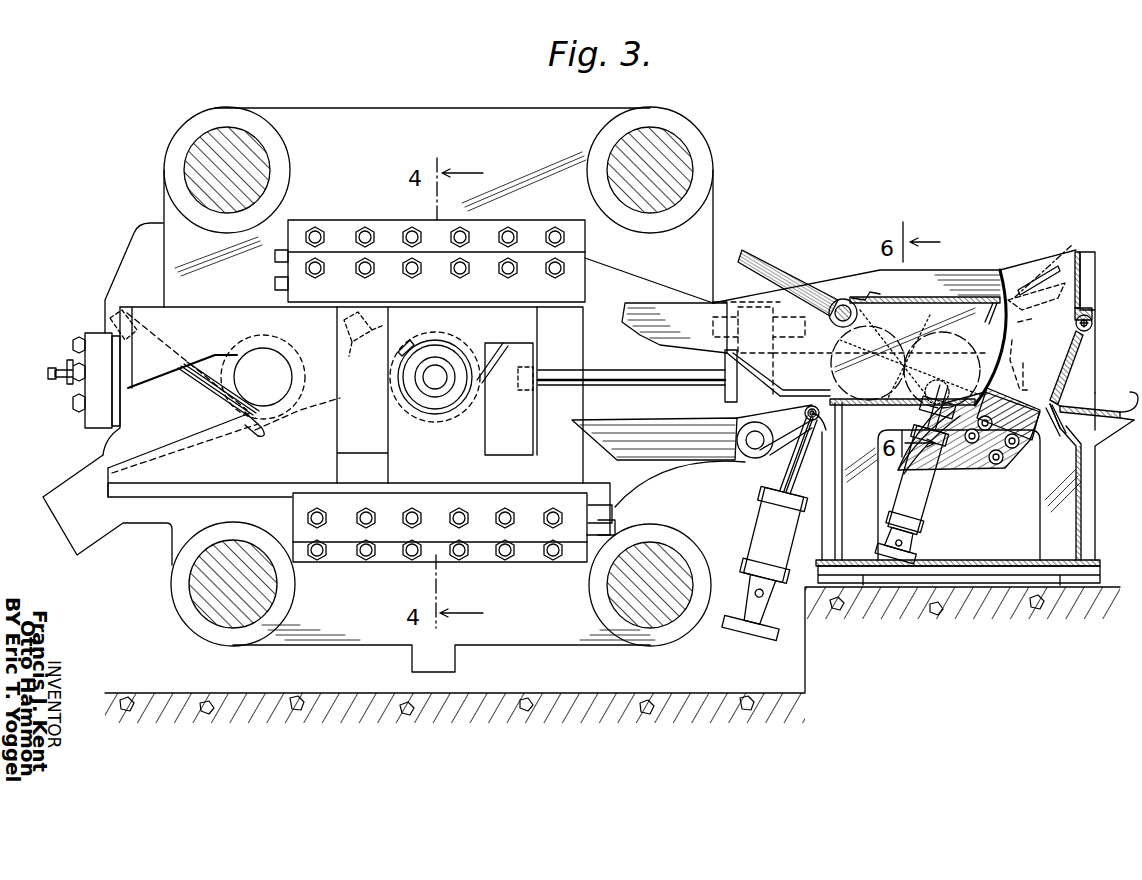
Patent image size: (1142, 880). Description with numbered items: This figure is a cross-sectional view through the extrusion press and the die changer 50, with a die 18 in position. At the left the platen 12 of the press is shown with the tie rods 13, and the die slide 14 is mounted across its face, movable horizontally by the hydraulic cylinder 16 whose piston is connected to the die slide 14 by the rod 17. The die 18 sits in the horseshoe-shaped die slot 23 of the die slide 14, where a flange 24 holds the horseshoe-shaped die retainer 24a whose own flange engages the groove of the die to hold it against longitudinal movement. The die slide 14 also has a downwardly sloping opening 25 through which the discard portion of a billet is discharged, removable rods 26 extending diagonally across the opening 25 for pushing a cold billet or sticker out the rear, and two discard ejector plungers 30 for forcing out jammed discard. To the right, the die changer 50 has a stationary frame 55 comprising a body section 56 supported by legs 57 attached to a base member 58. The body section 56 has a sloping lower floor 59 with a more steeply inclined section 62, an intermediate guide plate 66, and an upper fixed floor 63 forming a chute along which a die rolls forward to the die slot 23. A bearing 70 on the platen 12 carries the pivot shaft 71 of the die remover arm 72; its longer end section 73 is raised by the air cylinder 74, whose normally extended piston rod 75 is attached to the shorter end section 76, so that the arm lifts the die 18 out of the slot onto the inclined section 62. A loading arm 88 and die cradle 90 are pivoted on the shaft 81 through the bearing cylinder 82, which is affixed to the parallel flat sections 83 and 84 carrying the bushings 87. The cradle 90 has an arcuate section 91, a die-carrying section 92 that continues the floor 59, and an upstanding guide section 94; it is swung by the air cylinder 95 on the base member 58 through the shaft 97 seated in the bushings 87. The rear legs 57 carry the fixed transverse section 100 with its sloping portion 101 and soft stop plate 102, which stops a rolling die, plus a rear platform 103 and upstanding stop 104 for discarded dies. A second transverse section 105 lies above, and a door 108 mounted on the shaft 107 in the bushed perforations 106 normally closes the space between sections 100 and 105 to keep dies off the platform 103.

The platen 12 is at (445, 125).
The tie rods 13 is at (197, 160).
The die slide 14 is at (157, 314).
The hydraulic cylinder 16 is at (1012, 340).
The rod 17 is at (632, 390).
The die 18 is at (428, 397).
The die slot 23 is at (485, 350).
The flange 24 is at (448, 420).
The die retainer 24a is at (404, 342).
The downwardly sloping opening 25 is at (186, 425).
The rods 26 is at (196, 390).
The discard ejector plungers 30 is at (352, 356).
The die changer 50 is at (992, 265).
The stationary frame 55 is at (1092, 243).
The body section 56 is at (1040, 264).
The legs 57 is at (870, 517).
The base member 58 is at (970, 578).
The sloping lower floor 59 is at (862, 412).
The inclined section 62 is at (760, 388).
The upper fixed floor 63 is at (900, 297).
The guide plate 66 is at (648, 320).
The bearing 70 is at (748, 455).
The pivot shaft 71 is at (800, 413).
The die remover arm 72 is at (700, 425).
The longer end section 73 is at (612, 432).
The air cylinder 74 is at (775, 540).
The piston rod 75 is at (796, 472).
The shorter end section 76 is at (812, 428).
The pivot shaft 81 is at (862, 310).
The bearing cylinder 82 is at (838, 300).
The flat section 83 is at (903, 351).
The flat section 84 is at (930, 330).
The bushings 87 is at (918, 378).
The loading arm 88 is at (788, 260).
The die cradle 90 is at (979, 486).
The arcuate section 91 is at (950, 472).
The die-carrying section 92 is at (1045, 276).
The upstanding guide section 94 is at (992, 420).
The air cylinder 95 is at (908, 522).
The shaft 97 is at (928, 408).
The fixed transverse section 100 is at (1085, 457).
The sloping portion 101 is at (1064, 435).
The stop plate 102 is at (1050, 440).
The rear platform 103 is at (1090, 406).
The upstanding stop 104 is at (1128, 404).
The fixed transverse section 105 is at (1080, 305).
The bushed perforation 106 is at (1092, 320).
The shaft 107 is at (1092, 326).
The door 108 is at (1087, 369).